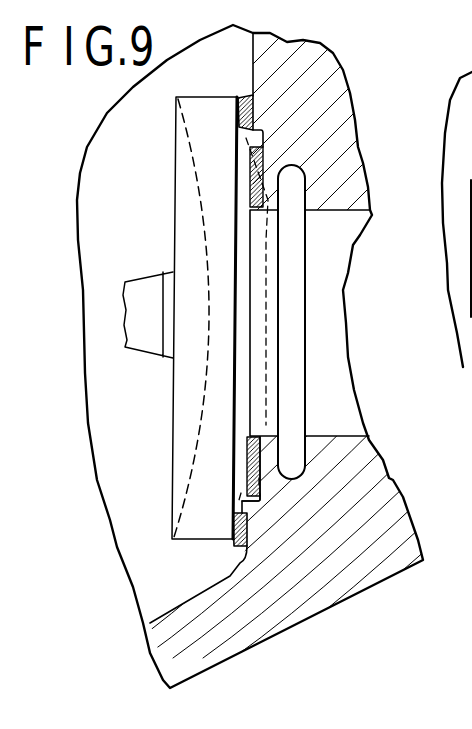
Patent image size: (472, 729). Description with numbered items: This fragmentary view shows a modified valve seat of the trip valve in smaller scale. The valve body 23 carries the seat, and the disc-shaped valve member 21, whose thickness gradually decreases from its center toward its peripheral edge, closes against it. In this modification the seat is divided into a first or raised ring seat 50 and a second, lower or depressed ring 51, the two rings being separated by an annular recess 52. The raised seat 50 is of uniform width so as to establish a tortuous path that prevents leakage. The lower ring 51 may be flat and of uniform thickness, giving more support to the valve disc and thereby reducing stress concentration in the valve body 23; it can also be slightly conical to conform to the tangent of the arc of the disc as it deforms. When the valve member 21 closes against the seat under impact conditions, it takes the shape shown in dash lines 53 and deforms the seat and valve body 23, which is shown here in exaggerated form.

The valve member 21 is at (192, 90).
The valve body 23 is at (304, 63).
The raised seat 50 is at (242, 546).
The lower ring 51 is at (250, 458).
The annular recess 52 is at (252, 506).
The dash lines 53 is at (198, 437).